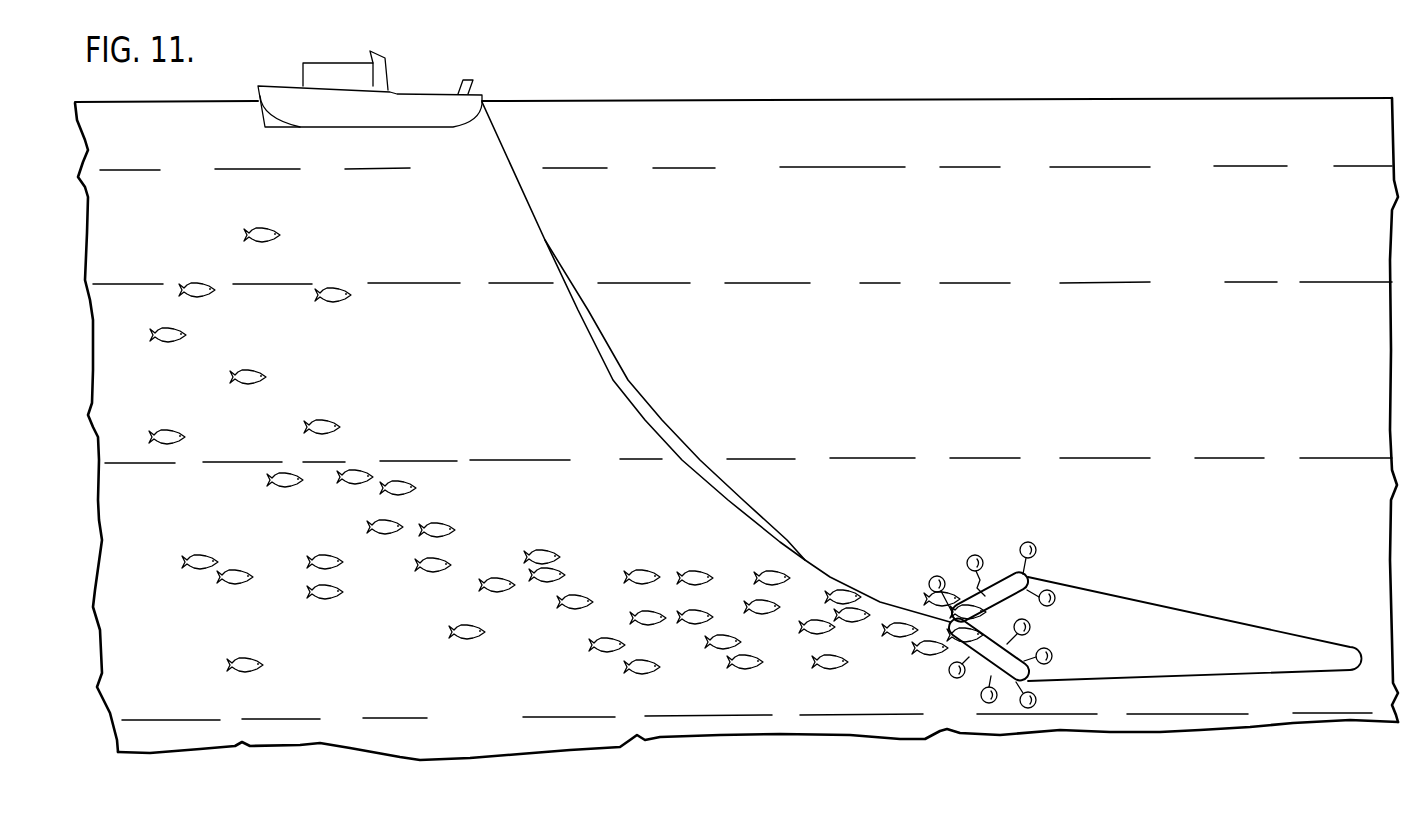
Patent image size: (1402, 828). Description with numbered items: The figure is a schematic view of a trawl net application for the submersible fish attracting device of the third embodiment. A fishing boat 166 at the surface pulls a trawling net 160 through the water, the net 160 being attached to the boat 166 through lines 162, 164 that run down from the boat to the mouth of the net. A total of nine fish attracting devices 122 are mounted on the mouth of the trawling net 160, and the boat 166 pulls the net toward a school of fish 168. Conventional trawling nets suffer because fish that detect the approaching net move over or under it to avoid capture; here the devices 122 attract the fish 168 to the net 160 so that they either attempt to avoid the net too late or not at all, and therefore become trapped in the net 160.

The fishing boat 166 is at (437, 92).
The line 164 is at (632, 384).
The line 162 is at (607, 371).
The fish attracting device 122 is at (1037, 548).
The trawling net 160 is at (1158, 608).
The school of fish 168 is at (527, 653).